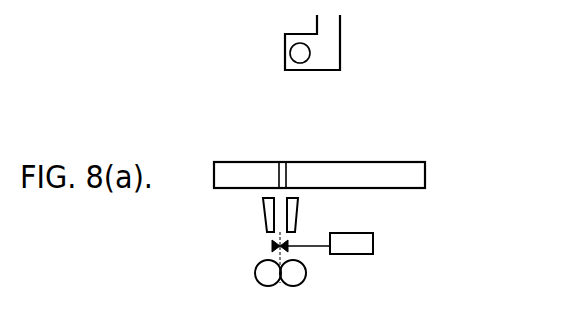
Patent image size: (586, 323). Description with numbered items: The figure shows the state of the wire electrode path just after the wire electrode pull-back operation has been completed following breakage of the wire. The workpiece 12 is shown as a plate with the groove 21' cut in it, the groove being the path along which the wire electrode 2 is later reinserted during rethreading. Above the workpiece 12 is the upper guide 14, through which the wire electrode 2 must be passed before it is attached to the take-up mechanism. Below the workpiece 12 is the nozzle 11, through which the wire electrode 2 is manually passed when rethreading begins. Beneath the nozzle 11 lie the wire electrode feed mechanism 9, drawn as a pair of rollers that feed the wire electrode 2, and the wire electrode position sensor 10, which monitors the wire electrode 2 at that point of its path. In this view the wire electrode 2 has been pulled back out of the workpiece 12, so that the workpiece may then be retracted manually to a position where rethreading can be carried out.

The upper guide 14 is at (303, 58).
The workpiece 12 is at (405, 167).
The groove 21' is at (315, 155).
The nozzle 11 is at (298, 215).
The wire electrode position sensor 10 is at (373, 243).
The wire electrode feed mechanism 9 is at (305, 278).
The wire electrode 2 is at (278, 288).